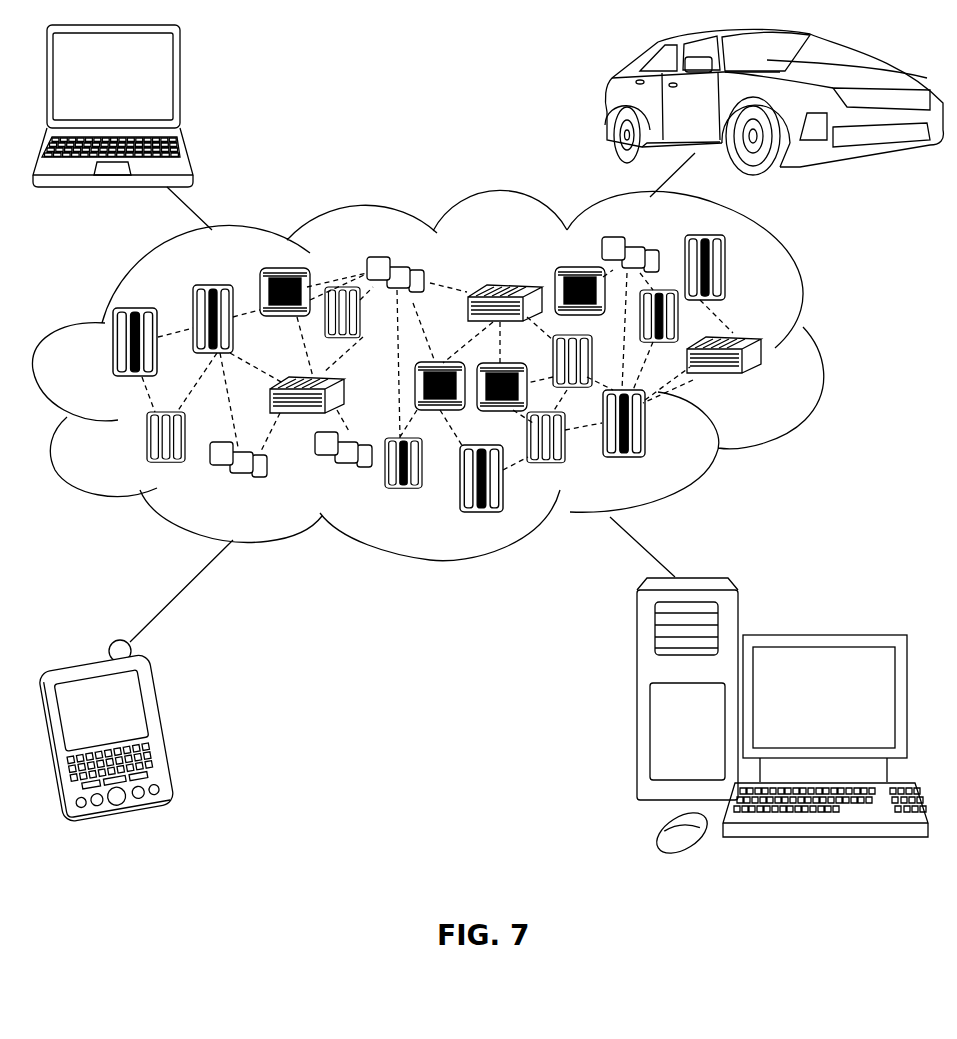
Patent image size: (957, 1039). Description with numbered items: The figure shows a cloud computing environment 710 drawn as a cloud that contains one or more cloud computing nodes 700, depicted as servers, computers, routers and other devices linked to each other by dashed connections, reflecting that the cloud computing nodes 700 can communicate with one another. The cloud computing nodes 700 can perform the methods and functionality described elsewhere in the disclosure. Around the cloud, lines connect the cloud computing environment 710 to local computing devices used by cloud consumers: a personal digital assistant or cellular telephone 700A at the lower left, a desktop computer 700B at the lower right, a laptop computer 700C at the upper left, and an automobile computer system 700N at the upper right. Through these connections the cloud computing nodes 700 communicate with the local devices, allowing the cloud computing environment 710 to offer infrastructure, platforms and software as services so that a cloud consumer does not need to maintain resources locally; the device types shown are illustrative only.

The cloud computing nodes 700 is at (470, 397).
The cloud computing environment 710 is at (820, 353).
The personal digital assistant (PDA) or cellular telephone 700A is at (170, 727).
The desktop computer 700B is at (820, 633).
The laptop computer 700C is at (182, 85).
The automobile computer system 700N is at (610, 98).